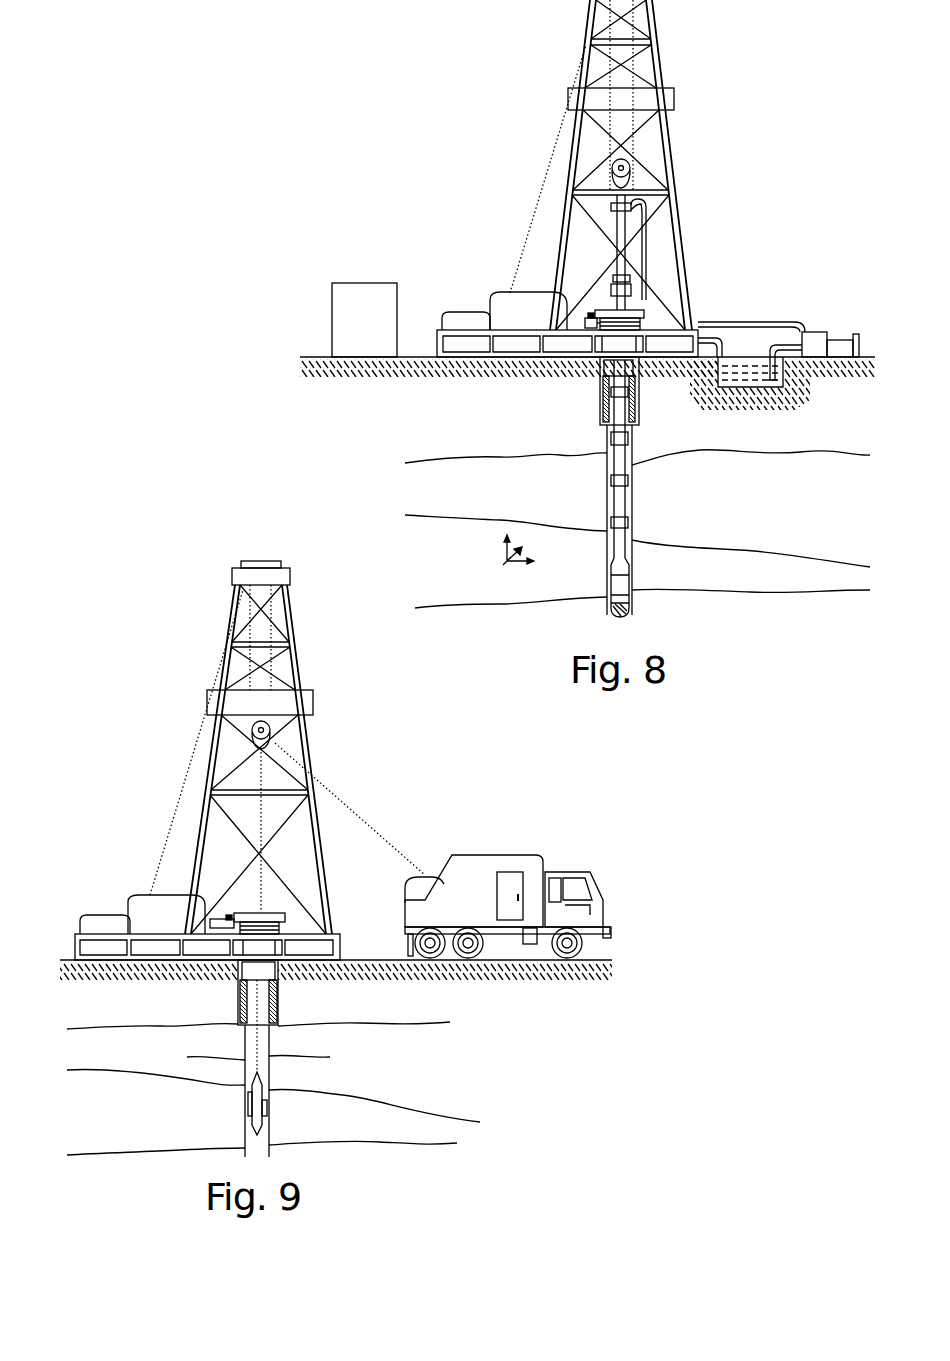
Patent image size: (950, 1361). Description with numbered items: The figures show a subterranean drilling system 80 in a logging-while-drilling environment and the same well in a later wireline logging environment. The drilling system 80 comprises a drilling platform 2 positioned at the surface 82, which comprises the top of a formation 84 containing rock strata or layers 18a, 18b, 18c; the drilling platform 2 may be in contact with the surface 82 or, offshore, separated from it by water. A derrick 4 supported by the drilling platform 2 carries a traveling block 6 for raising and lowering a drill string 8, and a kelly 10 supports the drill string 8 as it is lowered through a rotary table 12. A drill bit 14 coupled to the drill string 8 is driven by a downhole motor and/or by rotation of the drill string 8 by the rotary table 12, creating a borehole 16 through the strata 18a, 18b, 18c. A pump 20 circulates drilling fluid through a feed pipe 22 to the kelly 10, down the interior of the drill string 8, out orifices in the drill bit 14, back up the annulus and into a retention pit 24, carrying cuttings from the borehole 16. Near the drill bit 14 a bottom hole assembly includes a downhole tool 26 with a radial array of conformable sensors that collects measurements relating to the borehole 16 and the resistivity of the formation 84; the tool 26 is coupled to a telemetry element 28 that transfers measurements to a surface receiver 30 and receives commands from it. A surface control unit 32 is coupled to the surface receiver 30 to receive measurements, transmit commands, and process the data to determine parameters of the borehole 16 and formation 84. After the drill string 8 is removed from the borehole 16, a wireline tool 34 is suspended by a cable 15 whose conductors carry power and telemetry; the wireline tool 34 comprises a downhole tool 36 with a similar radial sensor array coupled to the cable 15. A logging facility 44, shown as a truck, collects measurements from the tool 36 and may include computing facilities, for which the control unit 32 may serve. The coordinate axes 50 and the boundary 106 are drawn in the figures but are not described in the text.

In FIG. 8, the drilling platform 2 is at (437, 340).
In FIG. 9, the drilling platform 2 is at (342, 950).
In FIG. 8, the derrick 4 is at (660, 56).
In FIG. 9, the derrick 4 is at (321, 845).
In FIG. 8, the traveling block 6 is at (630, 165).
In FIG. 9, the traveling block 6 is at (267, 724).
In FIG. 8, the drill string 8 is at (625, 452).
In FIG. 8, the kelly 10 is at (622, 218).
In FIG. 8, the rotary table 12 is at (636, 310).
In FIG. 9, the rotary table 12 is at (268, 912).
In FIG. 8, the drill bit 14 is at (631, 618).
In FIG. 9, the cable 15 is at (257, 1002).
In FIG. 8, the borehole 16 is at (633, 467).
In FIG. 9, the borehole 16 is at (263, 1048).
In FIG. 8, the rock stratum or layer 18a is at (440, 559).
In FIG. 9, the rock stratum or layer 18a is at (437, 1016).
In FIG. 8, the rock stratum or layer 18b is at (637, 520).
In FIG. 9, the rock stratum or layer 18b is at (100, 1064).
In FIG. 8, the rock stratum or layer 18c is at (782, 439).
In FIG. 9, the rock stratum or layer 18c is at (100, 1144).
In FIG. 8, the pump 20 is at (815, 332).
In FIG. 8, the feed pipe 22 is at (745, 322).
In FIG. 8, the retention pit 24 is at (753, 378).
In FIG. 8, the downhole tool 26 is at (613, 587).
In FIG. 8, the telemetry element 28 is at (617, 570).
In FIG. 8, the surface receiver 30 is at (624, 278).
In FIG. 8, the surface control unit 32 is at (378, 331).
In FIG. 9, the wireline tool 34 is at (252, 1087).
In FIG. 9, the downhole tool 36 is at (250, 1107).
In FIG. 9, the logging facility 44 is at (483, 855).
In FIG. 8, the coordinate system 50 is at (497, 555).
In FIG. 8, the subterranean drilling system 80 is at (757, 110).
In FIG. 8, the surface 82 is at (316, 357).
In FIG. 9, the surface 82 is at (68, 960).
In FIG. 8, the formation 84 is at (360, 434).
In FIG. 9, the formation 84 is at (573, 1041).
In FIG. 9, the formation boundary 106 is at (318, 1058).